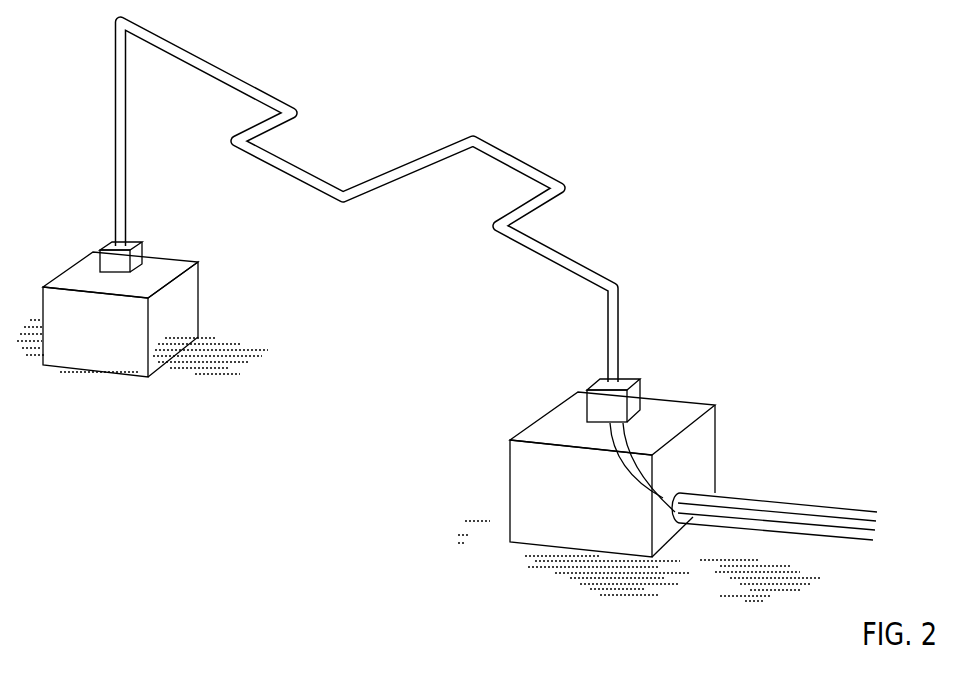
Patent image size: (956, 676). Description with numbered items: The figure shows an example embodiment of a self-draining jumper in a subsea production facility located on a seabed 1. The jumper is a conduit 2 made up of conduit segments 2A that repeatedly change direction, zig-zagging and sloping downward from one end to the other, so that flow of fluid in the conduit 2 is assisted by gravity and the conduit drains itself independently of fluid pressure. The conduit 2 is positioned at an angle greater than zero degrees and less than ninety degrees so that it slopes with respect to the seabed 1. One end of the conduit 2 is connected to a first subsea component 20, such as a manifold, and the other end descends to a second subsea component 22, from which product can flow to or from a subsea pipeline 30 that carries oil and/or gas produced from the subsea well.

The seabed 1 is at (353, 505).
The conduit 2 is at (523, 90).
The conduit segments 2A is at (213, 63).
The first subsea component 20 is at (142, 309).
The second device 22 is at (640, 490).
The subsea pipeline 30 is at (747, 505).